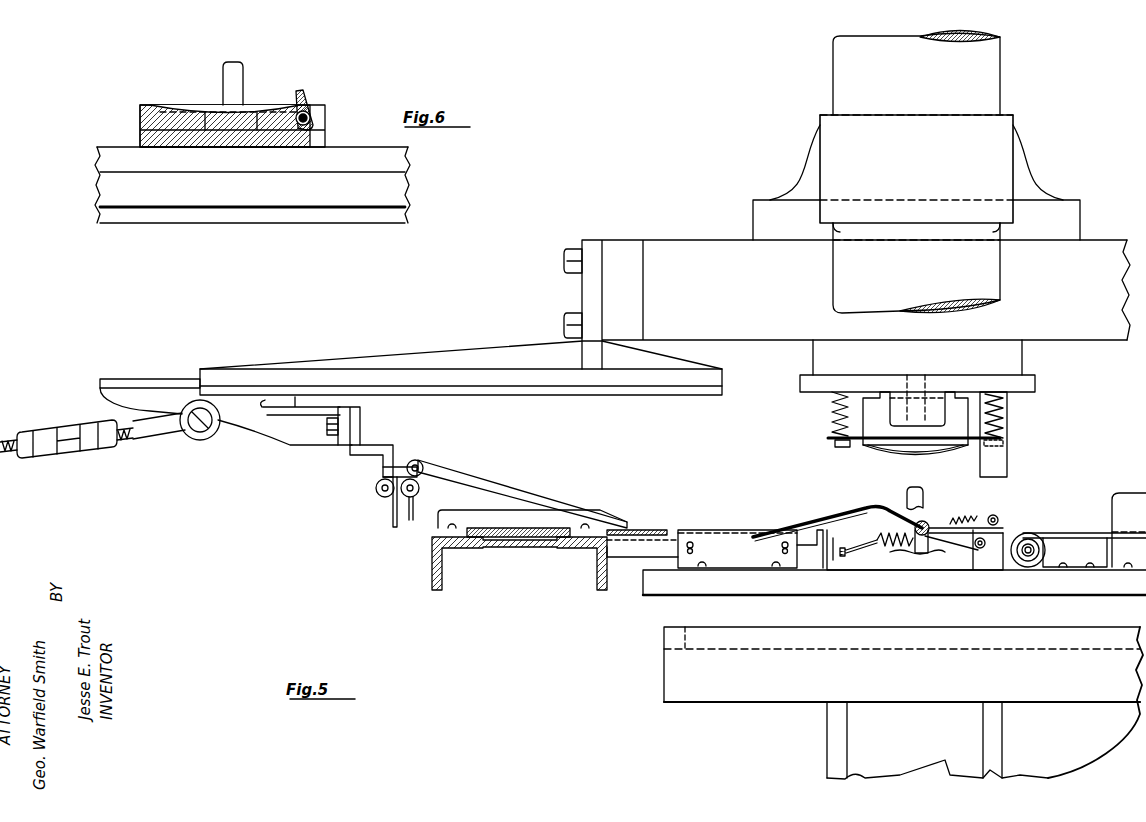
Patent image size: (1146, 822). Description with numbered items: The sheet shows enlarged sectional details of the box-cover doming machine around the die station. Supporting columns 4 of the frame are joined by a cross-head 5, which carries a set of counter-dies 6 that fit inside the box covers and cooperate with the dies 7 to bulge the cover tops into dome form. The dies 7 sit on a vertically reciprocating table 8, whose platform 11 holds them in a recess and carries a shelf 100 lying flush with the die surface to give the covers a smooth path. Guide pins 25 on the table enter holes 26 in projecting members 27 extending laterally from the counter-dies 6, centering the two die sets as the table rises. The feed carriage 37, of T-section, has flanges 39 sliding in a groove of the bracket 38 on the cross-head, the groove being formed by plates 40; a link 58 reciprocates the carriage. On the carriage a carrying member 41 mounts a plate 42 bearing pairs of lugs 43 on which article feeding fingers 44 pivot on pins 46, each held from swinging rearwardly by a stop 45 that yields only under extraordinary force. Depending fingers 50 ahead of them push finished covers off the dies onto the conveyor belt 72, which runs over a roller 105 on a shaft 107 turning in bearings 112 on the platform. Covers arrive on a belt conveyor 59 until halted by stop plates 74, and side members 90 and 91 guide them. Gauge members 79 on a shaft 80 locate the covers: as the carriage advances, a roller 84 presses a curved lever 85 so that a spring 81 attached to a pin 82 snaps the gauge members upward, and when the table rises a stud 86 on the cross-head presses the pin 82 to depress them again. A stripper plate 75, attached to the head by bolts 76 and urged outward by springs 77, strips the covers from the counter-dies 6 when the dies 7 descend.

In FIG. 5, the supporting columns 4 is at (916, 172).
In FIG. 5, the cross-head 5 is at (710, 240).
In FIG. 5, the counter-dies 6 is at (893, 457).
In FIG. 6, the dies 7 is at (162, 105).
In FIG. 5, the dies 7 is at (915, 552).
In FIG. 5, the table 8 is at (755, 703).
In FIG. 6, the platform 11 is at (220, 200).
In FIG. 5, the platform 11 is at (685, 627).
In FIG. 6, the guide pins 25 is at (238, 62).
In FIG. 5, the guide pins 25 is at (906, 497).
In FIG. 5, the holes 26 is at (930, 410).
In FIG. 5, the projecting members 27 is at (898, 402).
In FIG. 5, the carriage 37 is at (248, 432).
In FIG. 5, the bracket 38 is at (466, 351).
In FIG. 5, the flanges 39 is at (145, 378).
In FIG. 5, the plates 40 is at (482, 395).
In FIG. 5, the carrying member 41 is at (338, 441).
In FIG. 5, the plate 42 is at (350, 425).
In FIG. 5, the lugs 43 is at (386, 448).
In FIG. 5, the article feeding fingers 44 is at (390, 520).
In FIG. 5, the stops 45 is at (382, 500).
In FIG. 5, the pins 46 is at (378, 482).
In FIG. 5, the article feeding fingers 50 is at (548, 497).
In FIG. 5, the link 58 is at (143, 442).
In FIG. 5, the belt conveyor 59 is at (523, 540).
In FIG. 5, the conveyor belt 72 is at (1070, 533).
In FIG. 5, the stop plates 74 is at (438, 527).
In FIG. 5, the plate 75 is at (858, 441).
In FIG. 5, the bolts 76 is at (835, 445).
In FIG. 5, the springs 77 is at (830, 430).
In FIG. 6, the gauge members 79 is at (306, 96).
In FIG. 5, the gauge members 79 is at (980, 521).
In FIG. 5, the shaft 80 is at (978, 550).
In FIG. 5, the spring 81 is at (886, 548).
In FIG. 5, the pin 82 is at (999, 518).
In FIG. 5, the roller 84 is at (411, 500).
In FIG. 5, the curved lever 85 is at (828, 513).
In FIG. 5, the stud 86 is at (1007, 465).
In FIG. 5, the side member 90 is at (750, 549).
In FIG. 5, the side member 91 is at (1128, 500).
In FIG. 5, the shelf 100 is at (633, 555).
In FIG. 5, the roller 105 is at (1048, 548).
In FIG. 5, the shaft 107 is at (1032, 545).
In FIG. 5, the bearings 112 is at (1028, 560).